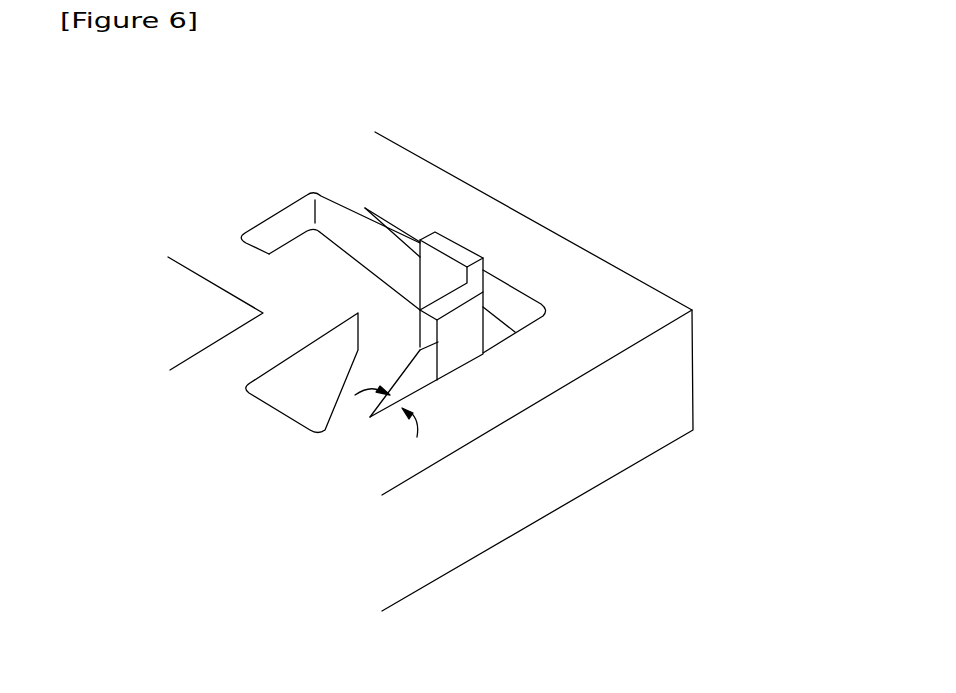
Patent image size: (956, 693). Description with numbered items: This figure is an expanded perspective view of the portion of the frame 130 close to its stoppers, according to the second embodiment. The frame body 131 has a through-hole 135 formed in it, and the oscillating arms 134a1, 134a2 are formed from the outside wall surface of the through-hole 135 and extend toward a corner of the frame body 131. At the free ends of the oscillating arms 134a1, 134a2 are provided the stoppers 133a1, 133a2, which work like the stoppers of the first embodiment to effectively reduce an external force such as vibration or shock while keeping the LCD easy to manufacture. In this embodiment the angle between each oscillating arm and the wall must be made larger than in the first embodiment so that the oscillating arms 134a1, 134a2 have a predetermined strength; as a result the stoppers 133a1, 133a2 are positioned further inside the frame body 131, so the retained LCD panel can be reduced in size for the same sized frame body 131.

The frame 130 is at (407, 132).
The frame body 131 is at (643, 283).
The stopper 133a1 is at (462, 343).
The stopper 133a2 is at (468, 256).
The oscillating arm 134a1 is at (414, 362).
The oscillating arm 134a2 is at (387, 233).
The through-hole 135 is at (298, 418).